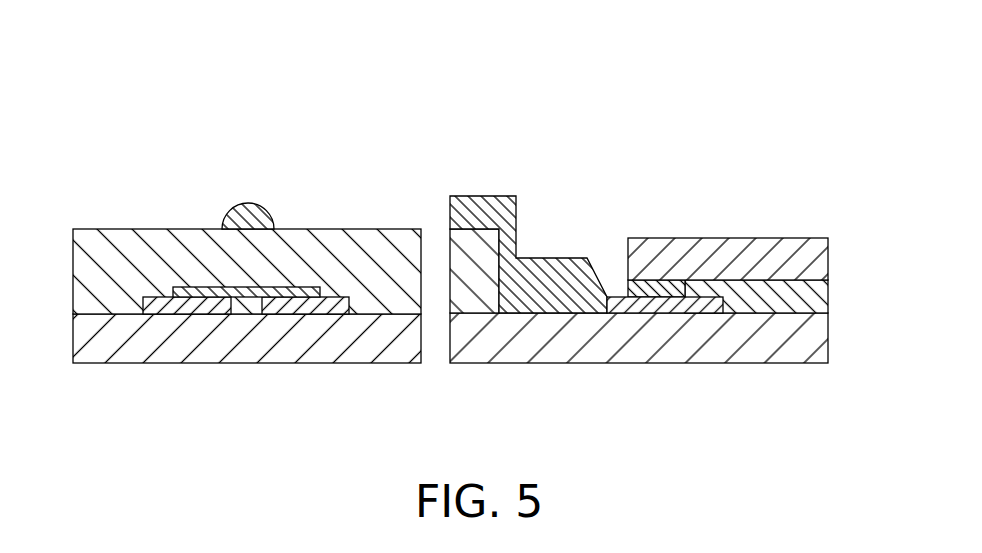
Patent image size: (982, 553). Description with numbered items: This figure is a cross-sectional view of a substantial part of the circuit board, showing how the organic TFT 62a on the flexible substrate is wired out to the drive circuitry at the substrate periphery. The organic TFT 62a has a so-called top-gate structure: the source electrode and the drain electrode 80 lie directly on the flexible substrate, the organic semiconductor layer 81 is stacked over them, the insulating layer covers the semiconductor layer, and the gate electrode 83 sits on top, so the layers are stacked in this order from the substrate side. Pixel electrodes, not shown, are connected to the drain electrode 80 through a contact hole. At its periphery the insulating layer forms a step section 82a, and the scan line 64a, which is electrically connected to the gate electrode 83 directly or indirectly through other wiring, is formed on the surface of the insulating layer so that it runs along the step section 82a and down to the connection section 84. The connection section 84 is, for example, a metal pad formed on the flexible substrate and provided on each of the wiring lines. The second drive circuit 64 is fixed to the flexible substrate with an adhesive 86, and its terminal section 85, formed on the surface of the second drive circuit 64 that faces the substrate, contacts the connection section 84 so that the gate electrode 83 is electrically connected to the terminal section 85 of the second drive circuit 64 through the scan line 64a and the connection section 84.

The organic TFT 62a is at (247, 235).
The second drive circuit 64 is at (753, 252).
The scan line 64a is at (487, 213).
The source electrode and drain electrode 80 is at (307, 297).
The organic semiconductor layer 81 is at (305, 290).
The step section 82a is at (666, 264).
The gate electrode 83 is at (248, 213).
The connection section 84 is at (707, 305).
The terminal section 85 is at (655, 285).
The adhesive 86 is at (798, 297).